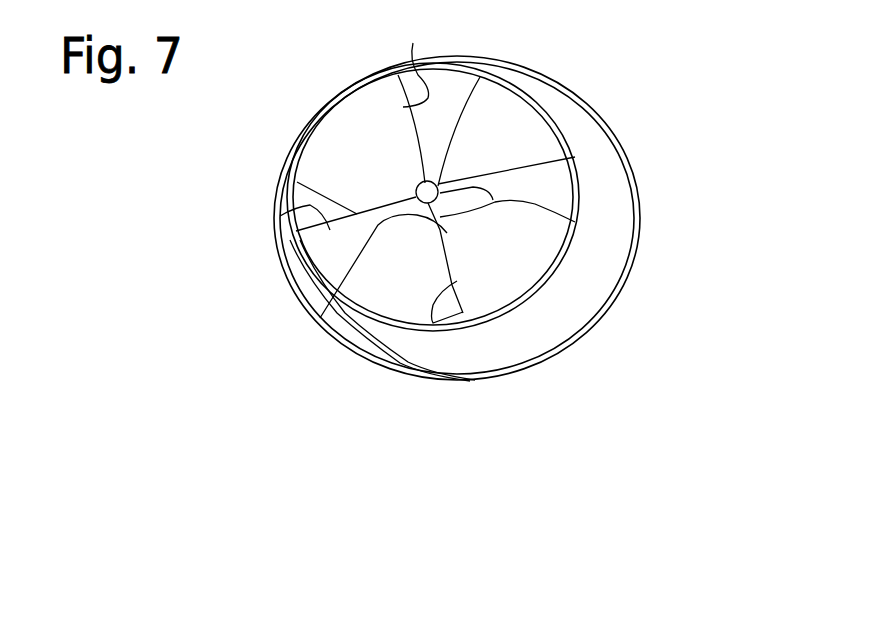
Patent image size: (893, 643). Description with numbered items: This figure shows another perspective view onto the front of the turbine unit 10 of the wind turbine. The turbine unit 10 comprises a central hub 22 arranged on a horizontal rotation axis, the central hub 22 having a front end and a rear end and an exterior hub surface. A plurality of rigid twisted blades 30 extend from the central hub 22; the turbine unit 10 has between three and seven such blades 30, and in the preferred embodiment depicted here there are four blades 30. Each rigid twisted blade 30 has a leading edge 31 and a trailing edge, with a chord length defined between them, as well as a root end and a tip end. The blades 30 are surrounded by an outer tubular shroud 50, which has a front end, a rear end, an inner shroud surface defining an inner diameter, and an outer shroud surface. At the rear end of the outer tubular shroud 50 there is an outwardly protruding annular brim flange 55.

The turbine unit 10 is at (657, 232).
The central hub 22 is at (320, 318).
The rigid twisted blade 30 is at (390, 135).
The leading edge 31 is at (413, 43).
The outer tubular shroud 50 is at (533, 338).
The annular brim flange 55 is at (612, 297).